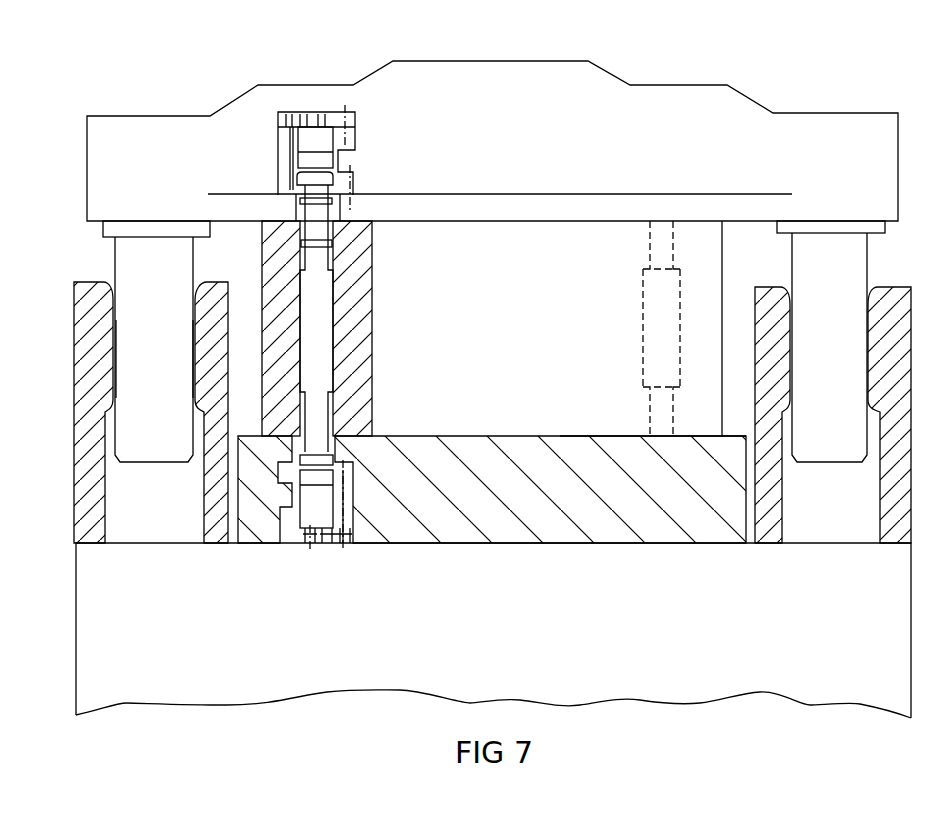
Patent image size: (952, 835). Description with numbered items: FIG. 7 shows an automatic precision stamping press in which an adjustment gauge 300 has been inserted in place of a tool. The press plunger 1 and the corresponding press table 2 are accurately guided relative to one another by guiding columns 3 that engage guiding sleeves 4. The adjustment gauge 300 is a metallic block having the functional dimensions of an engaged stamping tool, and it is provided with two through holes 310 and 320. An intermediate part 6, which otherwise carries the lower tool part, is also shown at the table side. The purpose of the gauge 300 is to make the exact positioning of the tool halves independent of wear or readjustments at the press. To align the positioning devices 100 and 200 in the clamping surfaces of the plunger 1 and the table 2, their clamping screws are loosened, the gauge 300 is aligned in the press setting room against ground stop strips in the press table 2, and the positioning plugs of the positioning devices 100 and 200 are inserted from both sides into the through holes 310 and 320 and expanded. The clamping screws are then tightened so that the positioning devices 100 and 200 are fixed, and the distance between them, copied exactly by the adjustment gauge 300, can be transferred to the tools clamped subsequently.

The press plunger 1 is at (638, 112).
The press table 2 is at (165, 687).
The guiding columns 3 is at (133, 270).
The guiding sleeves 4 is at (77, 378).
The intermediate part 6 is at (603, 522).
The positioning device 100 is at (330, 140).
The positioning device 200 is at (307, 517).
The adjustment gauge 300 is at (422, 407).
The through hole 310 is at (330, 326).
The through hole 320 is at (643, 310).